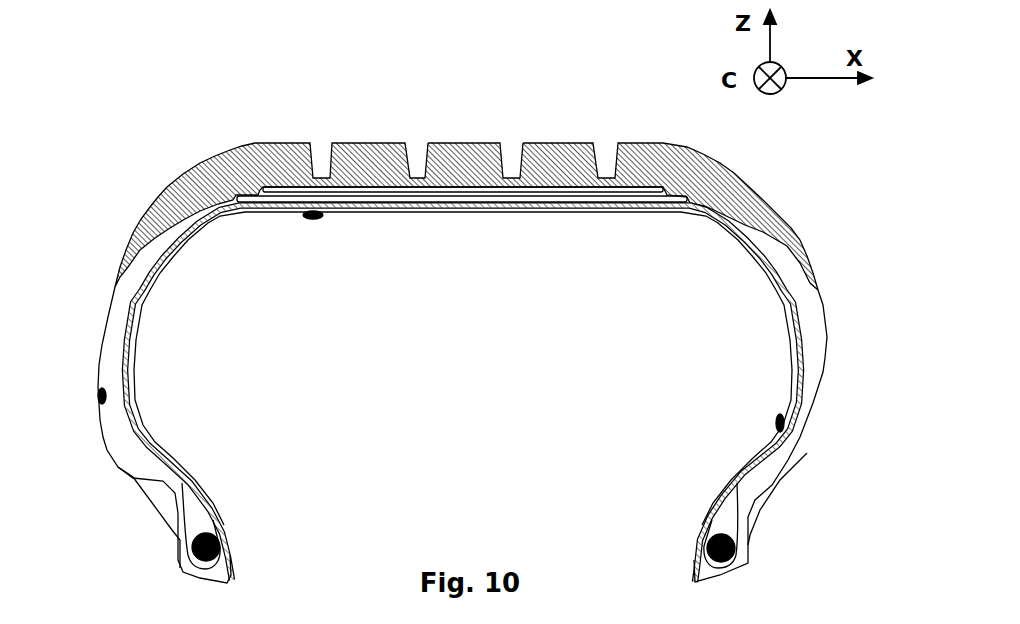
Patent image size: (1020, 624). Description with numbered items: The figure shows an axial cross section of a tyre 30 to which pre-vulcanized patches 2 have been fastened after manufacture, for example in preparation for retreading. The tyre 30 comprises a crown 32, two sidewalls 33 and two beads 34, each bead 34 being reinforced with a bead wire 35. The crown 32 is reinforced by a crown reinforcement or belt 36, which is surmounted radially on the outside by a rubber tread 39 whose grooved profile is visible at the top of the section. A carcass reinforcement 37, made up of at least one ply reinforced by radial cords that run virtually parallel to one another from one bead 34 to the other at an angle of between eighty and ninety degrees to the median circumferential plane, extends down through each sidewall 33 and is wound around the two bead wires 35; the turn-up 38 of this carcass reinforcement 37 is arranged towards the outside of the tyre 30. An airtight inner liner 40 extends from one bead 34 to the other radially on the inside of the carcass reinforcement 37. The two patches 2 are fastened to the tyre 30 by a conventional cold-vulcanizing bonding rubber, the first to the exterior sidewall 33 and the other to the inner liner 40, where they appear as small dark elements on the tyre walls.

The tyre 30 is at (296, 101).
The crown 32 is at (530, 106).
The rubber tread 39 is at (450, 142).
The crown reinforcement 36 is at (543, 200).
The carcass reinforcement 37 is at (150, 270).
The airtight inner liner 40 is at (131, 352).
The sidewall 33 is at (107, 348).
The pre-vulcanized patch 2 is at (318, 216).
The turn-up 38 is at (118, 467).
The bead 34 is at (167, 500).
The bead wire 35 is at (210, 568).